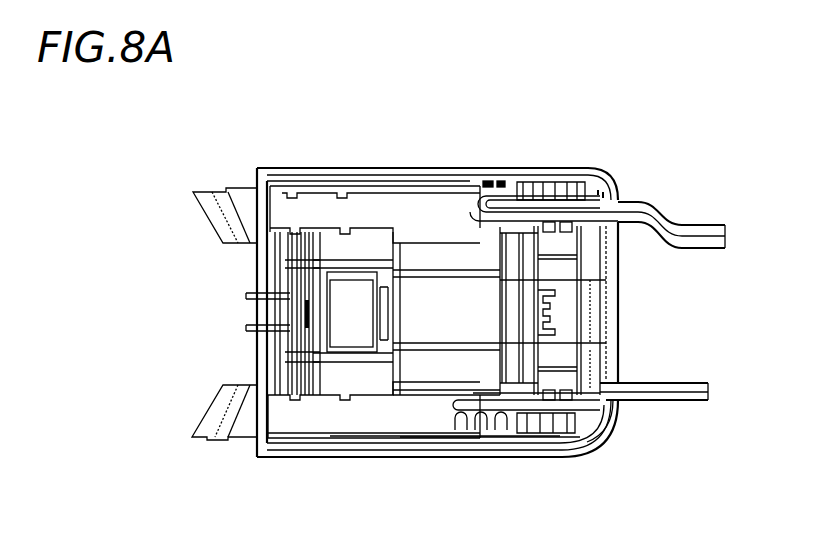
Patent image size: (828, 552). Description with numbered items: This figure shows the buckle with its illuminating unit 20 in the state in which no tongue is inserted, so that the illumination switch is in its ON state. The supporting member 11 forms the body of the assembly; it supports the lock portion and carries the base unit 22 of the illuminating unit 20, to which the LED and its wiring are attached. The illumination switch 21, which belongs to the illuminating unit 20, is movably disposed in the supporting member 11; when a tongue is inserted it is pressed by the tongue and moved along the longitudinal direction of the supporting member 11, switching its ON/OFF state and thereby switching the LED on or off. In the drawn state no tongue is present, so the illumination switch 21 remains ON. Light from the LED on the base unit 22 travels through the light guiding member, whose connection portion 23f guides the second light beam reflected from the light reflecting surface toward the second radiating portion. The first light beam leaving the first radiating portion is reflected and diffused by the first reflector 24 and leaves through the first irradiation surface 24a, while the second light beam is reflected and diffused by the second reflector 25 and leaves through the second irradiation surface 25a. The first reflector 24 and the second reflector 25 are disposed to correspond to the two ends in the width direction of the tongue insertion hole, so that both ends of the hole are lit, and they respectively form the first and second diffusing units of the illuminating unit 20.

The illuminating unit 20 is at (210, 146).
The illumination switch 21 is at (355, 253).
The supporting member 11 is at (500, 173).
The base unit 22 is at (355, 428).
The second reflector 25 is at (210, 237).
The second irradiation surface 25a is at (207, 214).
The first reflector 24 is at (187, 428).
The first irradiation surface 24a is at (208, 404).
The connection portion 23f is at (280, 320).